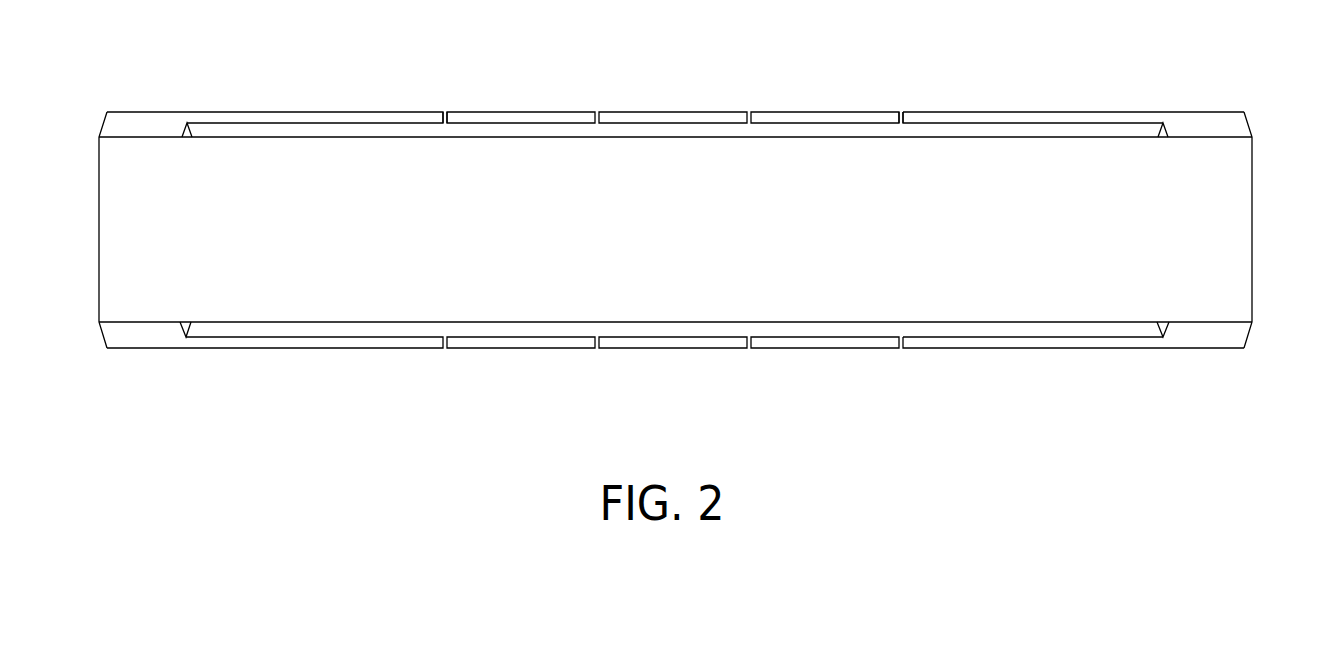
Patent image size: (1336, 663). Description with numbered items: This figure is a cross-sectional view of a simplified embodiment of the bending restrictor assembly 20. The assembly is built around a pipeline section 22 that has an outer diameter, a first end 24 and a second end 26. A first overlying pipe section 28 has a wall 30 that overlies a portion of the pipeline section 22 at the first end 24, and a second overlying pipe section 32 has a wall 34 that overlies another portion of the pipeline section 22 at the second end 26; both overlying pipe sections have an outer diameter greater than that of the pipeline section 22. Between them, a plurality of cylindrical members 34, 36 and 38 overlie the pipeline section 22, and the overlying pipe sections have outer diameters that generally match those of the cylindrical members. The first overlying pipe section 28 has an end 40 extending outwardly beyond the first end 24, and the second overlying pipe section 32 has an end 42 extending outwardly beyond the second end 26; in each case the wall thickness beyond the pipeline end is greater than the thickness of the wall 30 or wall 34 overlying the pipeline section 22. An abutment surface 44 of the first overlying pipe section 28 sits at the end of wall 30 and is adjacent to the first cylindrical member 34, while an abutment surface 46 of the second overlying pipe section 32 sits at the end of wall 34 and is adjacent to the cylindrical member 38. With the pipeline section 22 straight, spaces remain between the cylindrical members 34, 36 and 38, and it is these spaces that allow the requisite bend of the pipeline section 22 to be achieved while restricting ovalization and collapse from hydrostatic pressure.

The bending restrictor assembly 20 is at (678, 220).
The pipeline section 22 is at (1055, 140).
The first end 24 is at (187, 138).
The second end 26 is at (1165, 138).
The first overlying pipe section 28 is at (163, 118).
The wall 30 is at (372, 110).
The second overlying pipe section 32 is at (1197, 122).
The wall 34 is at (973, 108).
The cylindrical member 36 is at (667, 350).
The cylindrical member 38 is at (810, 350).
The end 40 is at (99, 293).
The end 42 is at (1252, 213).
The abutment surface 44 is at (445, 110).
The abutment surface 46 is at (902, 108).